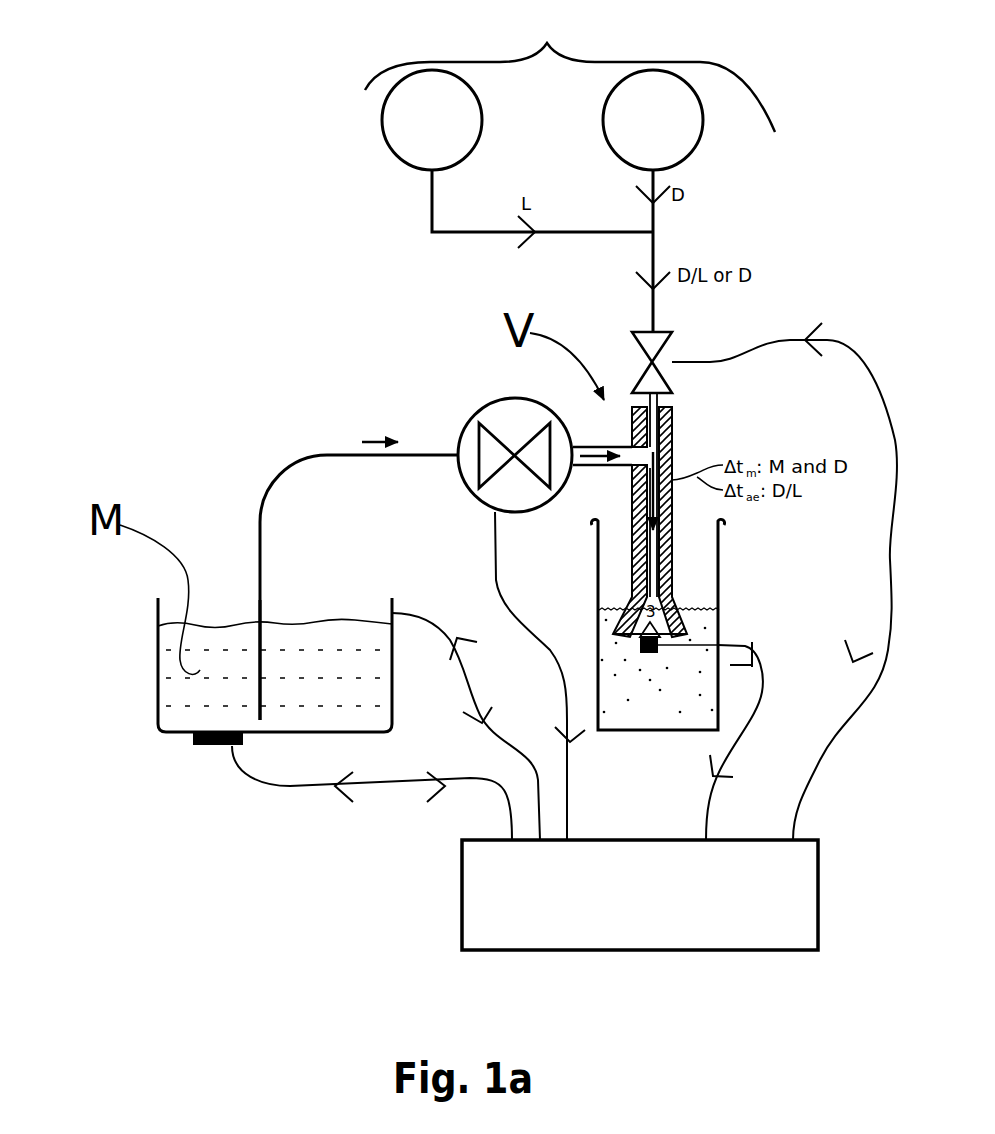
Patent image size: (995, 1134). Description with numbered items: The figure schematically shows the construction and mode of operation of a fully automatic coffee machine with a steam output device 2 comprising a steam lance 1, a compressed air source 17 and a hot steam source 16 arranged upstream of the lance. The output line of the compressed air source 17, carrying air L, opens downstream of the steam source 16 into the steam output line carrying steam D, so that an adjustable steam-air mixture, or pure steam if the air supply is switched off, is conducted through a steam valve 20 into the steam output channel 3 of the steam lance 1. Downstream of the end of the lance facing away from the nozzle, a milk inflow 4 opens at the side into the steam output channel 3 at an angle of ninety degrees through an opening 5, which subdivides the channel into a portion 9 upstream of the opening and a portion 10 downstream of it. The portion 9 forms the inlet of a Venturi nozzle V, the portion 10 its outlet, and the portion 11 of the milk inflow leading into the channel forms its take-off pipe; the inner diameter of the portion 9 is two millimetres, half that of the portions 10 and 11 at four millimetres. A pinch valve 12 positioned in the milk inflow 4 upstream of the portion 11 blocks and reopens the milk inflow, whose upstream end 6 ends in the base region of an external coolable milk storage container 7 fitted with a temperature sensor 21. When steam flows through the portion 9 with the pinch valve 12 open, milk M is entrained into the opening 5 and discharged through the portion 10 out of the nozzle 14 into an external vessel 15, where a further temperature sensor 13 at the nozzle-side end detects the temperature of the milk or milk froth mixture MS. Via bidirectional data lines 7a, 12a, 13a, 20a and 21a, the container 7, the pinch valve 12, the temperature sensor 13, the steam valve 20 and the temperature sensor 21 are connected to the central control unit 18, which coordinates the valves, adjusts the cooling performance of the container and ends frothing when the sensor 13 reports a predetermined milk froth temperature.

The steam lance 1 is at (678, 590).
The steam output device 2 is at (570, 66).
The steam output channel 3 is at (672, 413).
The milk inflow 4 is at (386, 460).
The opening 5 is at (660, 455).
The upstream end 6 is at (262, 665).
The coolable milk storage container 7 is at (158, 650).
The bidirectional data line 7a is at (466, 726).
The upstream portion of the steam output channel 9 is at (622, 407).
The downstream portion of the steam output channel 10 is at (623, 578).
The portion of the milk inflow 11 is at (591, 466).
The pinch valve 12 is at (515, 455).
The bidirectional data line 12a is at (555, 676).
The temperature sensor 13 is at (650, 658).
The bidirectional data line 13a is at (747, 741).
The nozzle 14 is at (620, 648).
The external vessel 15 is at (718, 550).
The hot steam source 16 is at (653, 120).
The compressed air source 17 is at (432, 120).
The central control unit 18 is at (462, 912).
The steam valve 20 is at (670, 336).
The bidirectional data line 20a is at (811, 581).
The temperature sensor 21 is at (190, 748).
The bidirectional data line 21a is at (372, 793).